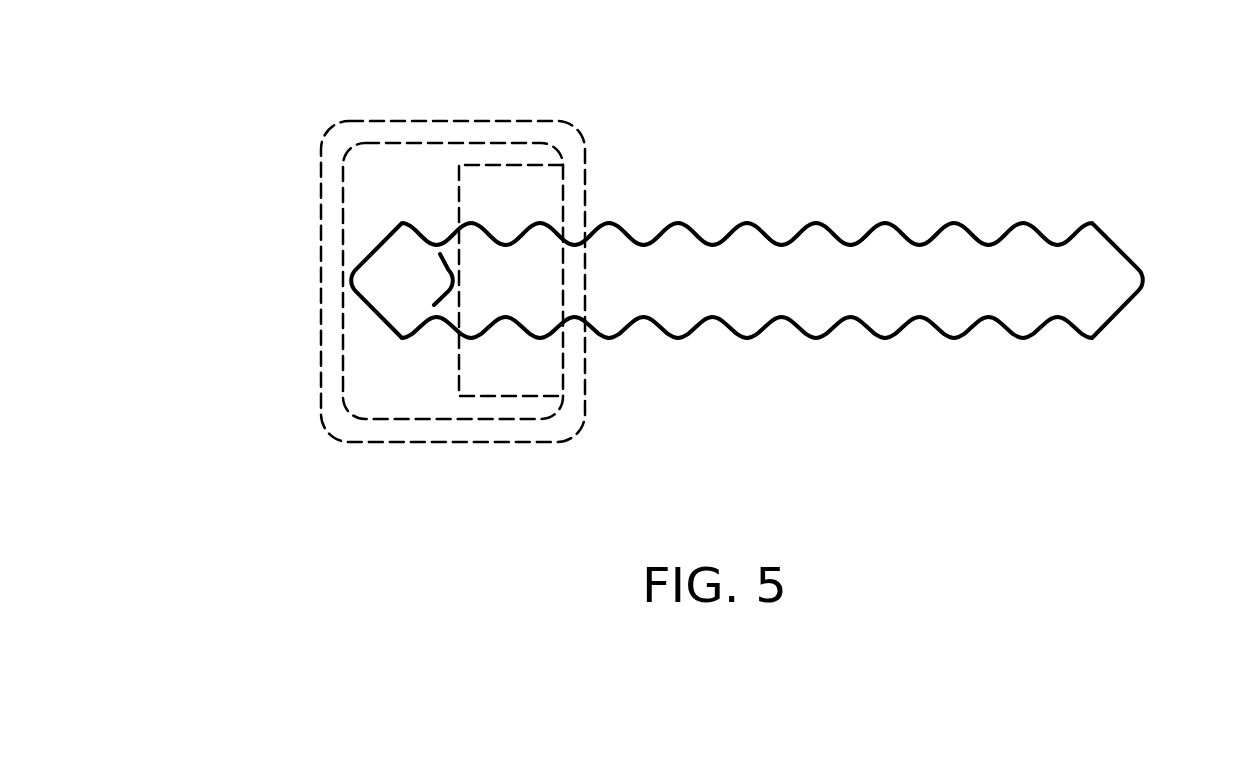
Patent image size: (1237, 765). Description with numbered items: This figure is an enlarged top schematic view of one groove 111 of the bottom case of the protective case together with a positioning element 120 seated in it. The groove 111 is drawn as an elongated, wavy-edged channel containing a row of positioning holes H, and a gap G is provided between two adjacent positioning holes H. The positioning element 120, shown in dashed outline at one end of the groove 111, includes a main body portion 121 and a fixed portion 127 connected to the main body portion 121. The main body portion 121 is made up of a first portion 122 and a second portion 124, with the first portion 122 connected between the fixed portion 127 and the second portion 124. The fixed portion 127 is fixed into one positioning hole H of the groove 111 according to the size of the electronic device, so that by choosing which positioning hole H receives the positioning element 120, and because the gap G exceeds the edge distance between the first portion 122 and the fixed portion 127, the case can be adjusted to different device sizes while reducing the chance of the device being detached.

The groove 111 is at (1077, 277).
The positioning element 120 is at (500, 107).
The main body portion 121 is at (371, 275).
The first portion 122 is at (373, 193).
The second portion 124 is at (350, 146).
The fixed portion 127 is at (373, 272).
The positioning hole H is at (418, 235).
The gap G is at (782, 205).